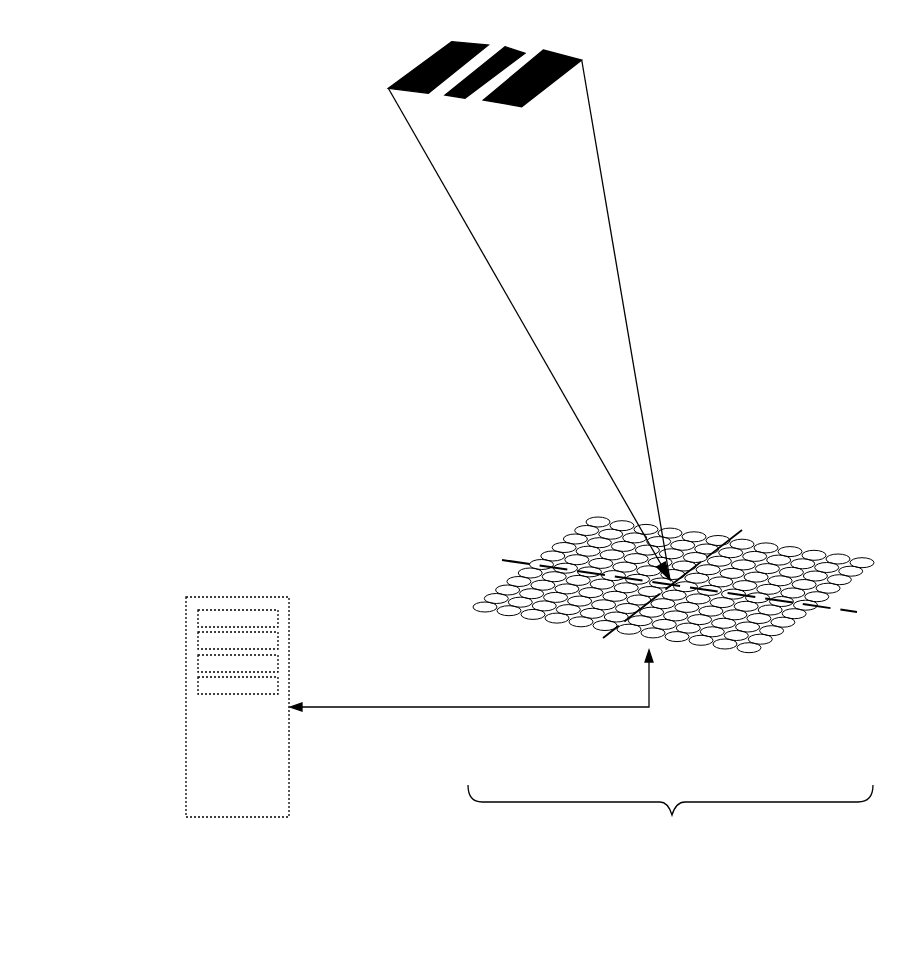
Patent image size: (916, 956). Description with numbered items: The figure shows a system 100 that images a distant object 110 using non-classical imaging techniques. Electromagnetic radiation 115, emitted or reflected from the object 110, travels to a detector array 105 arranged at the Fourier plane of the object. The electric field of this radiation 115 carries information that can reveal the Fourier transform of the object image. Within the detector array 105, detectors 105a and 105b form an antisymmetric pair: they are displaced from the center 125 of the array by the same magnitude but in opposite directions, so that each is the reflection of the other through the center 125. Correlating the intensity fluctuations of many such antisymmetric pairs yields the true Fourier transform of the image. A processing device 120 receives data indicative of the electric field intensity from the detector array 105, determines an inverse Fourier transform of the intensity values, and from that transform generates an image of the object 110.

The system 100 is at (77, 238).
The detector array 105 is at (658, 677).
The detector 105a is at (748, 572).
The detector 105b is at (594, 593).
The object 110 is at (535, 97).
The electromagnetic radiation 115 is at (614, 246).
The processing device 120 is at (186, 733).
The center 125 is at (670, 580).